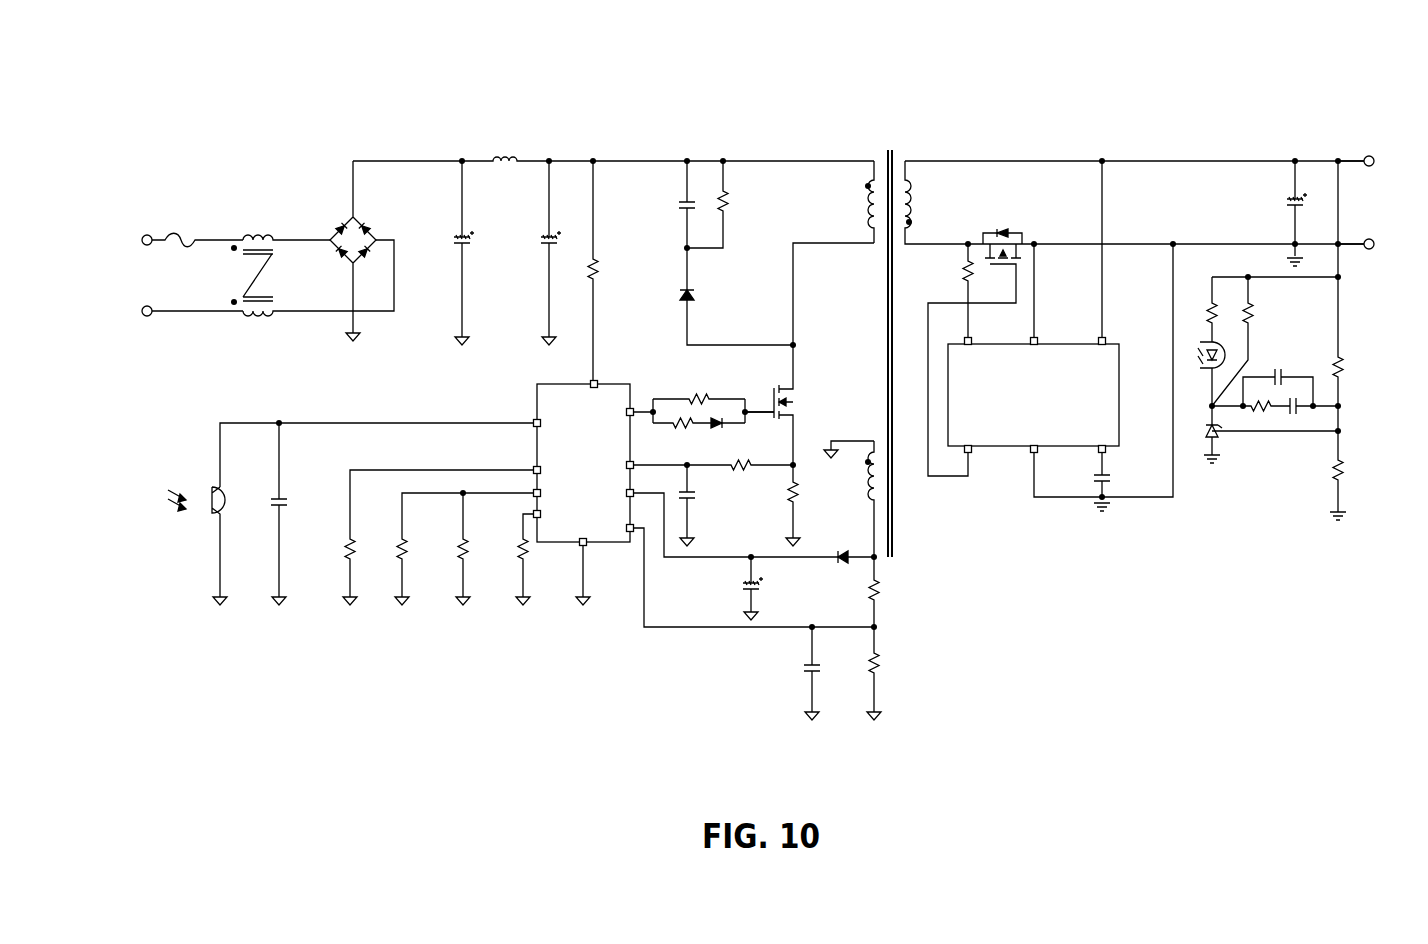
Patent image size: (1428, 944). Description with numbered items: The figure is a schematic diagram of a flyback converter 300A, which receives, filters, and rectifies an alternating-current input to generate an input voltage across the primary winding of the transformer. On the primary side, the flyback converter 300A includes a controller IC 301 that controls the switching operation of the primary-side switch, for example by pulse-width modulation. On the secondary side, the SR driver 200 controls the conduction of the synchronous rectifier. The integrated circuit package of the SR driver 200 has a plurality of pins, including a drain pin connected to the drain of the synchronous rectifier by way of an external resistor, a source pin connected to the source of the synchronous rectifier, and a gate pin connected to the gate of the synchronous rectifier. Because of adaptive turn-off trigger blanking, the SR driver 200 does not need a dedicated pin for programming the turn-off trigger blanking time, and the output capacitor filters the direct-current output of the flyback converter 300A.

The flyback converter 300A is at (272, 145).
The controller IC 301 is at (584, 463).
The SR driver 200 is at (1033, 395).